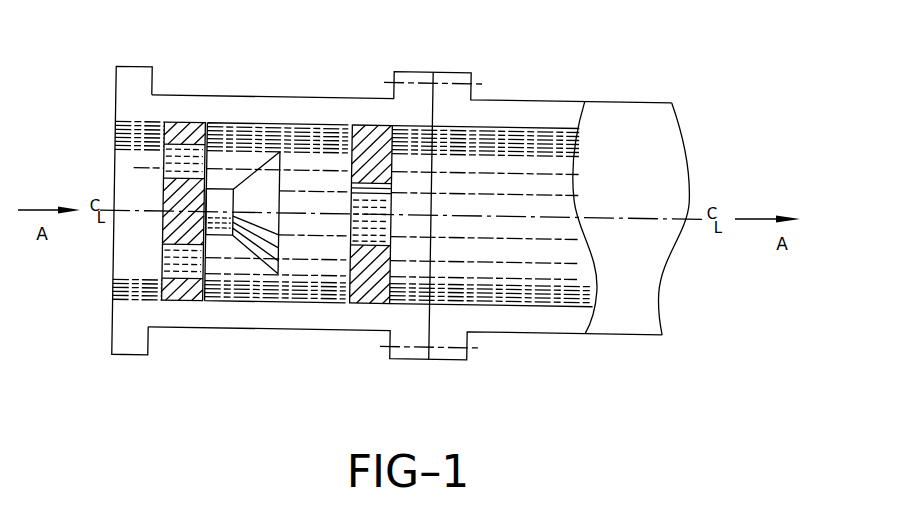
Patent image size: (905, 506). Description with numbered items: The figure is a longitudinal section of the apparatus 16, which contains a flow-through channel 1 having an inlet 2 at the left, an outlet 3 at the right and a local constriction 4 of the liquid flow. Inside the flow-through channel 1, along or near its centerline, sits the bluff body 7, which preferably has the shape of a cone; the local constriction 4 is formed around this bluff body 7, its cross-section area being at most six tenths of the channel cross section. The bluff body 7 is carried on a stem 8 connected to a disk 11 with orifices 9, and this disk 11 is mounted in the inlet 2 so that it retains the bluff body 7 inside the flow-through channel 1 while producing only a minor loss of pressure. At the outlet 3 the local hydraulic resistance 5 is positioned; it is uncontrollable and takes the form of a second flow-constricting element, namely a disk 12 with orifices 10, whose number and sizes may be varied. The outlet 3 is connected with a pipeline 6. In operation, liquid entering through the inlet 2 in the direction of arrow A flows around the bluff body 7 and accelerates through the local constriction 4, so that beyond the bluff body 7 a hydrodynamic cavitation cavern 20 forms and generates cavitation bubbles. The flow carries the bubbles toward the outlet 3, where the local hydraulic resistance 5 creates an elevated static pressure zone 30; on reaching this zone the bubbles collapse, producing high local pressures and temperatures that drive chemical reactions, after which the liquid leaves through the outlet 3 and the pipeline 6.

The flow-through channel 1 is at (340, 107).
The inlet 2 is at (127, 180).
The outlet 3 is at (428, 176).
The local constriction 4 is at (287, 142).
The local hydraulic resistance 5 is at (362, 138).
The pipeline 6 is at (538, 163).
The bluff body 7 is at (262, 180).
The stem 8 is at (215, 198).
The orifices 9 is at (172, 152).
The orifices 10 is at (373, 270).
The disk 11 is at (171, 231).
The disk 12 is at (377, 283).
The apparatus 16 is at (190, 350).
The hydrodynamic cavitation cavern 20 is at (292, 202).
The elevated static pressure zone 30 is at (392, 195).